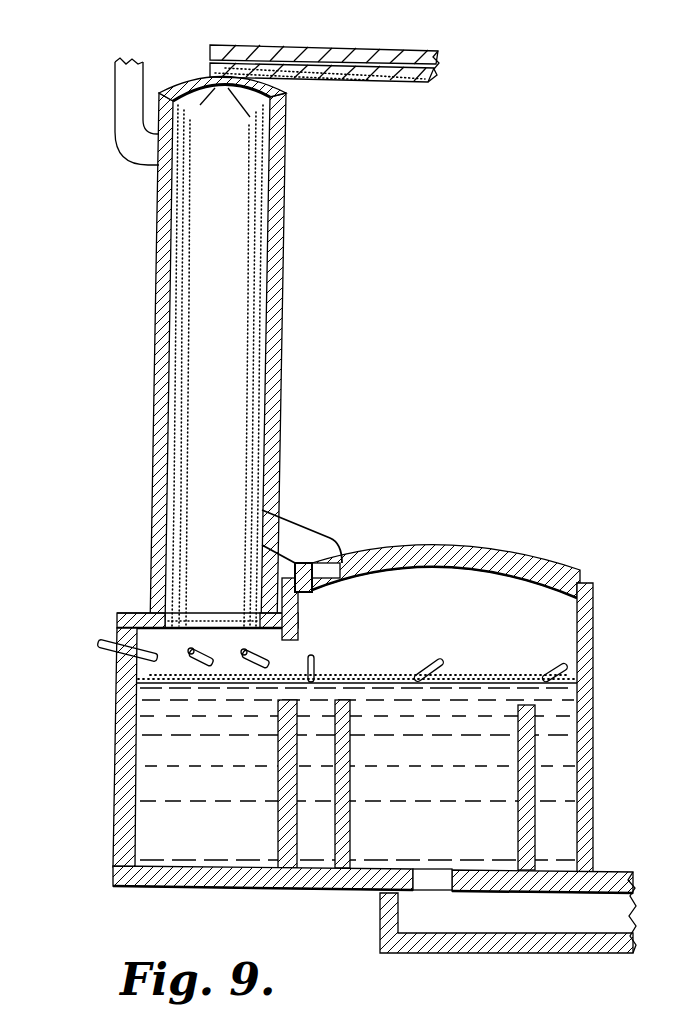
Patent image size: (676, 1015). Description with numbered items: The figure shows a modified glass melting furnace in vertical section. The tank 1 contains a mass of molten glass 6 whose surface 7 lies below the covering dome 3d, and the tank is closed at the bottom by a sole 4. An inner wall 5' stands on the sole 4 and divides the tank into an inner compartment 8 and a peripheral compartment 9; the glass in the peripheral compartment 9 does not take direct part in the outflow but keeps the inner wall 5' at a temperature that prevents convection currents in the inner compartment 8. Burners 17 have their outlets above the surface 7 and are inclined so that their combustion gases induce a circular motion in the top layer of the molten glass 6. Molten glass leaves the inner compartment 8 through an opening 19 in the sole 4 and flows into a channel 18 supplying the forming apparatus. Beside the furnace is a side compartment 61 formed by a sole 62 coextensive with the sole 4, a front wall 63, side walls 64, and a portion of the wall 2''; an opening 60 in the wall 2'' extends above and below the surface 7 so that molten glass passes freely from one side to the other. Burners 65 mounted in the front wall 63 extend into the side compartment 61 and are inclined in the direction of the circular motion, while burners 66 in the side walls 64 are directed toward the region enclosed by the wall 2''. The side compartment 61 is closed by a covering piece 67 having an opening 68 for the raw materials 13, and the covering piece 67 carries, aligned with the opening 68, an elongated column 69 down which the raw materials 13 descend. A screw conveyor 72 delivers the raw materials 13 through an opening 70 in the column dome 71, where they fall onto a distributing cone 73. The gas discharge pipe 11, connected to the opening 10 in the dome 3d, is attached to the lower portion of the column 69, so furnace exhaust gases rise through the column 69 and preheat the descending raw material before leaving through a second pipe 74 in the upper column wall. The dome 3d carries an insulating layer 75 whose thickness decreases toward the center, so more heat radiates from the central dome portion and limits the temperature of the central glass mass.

The tank 1 is at (595, 700).
The wall 2'' is at (458, 784).
The dome 3d is at (535, 578).
The sole 4 is at (370, 880).
The inner wall 5' is at (452, 785).
The mass of molten glass 6 is at (430, 700).
The surface 7 is at (485, 690).
The inner compartment 8 is at (448, 763).
The peripheral compartment 9 is at (320, 811).
The opening 10 is at (325, 577).
The pipe 11 is at (297, 538).
The raw materials 13 is at (256, 240).
The burners 17 is at (315, 666).
The channel 18 is at (580, 918).
The opening 19 is at (428, 882).
The opening 60 is at (292, 658).
The side compartment 61 is at (120, 795).
The sole 62 is at (232, 879).
The front wall 63 is at (128, 722).
The side walls 64 is at (123, 622).
The burners 65 is at (103, 645).
The burners 66 is at (254, 652).
The covering piece 67 is at (155, 644).
The opening 68 is at (195, 625).
The column 69 is at (153, 379).
The opening 70 is at (208, 82).
The dome 71 is at (189, 93).
The screw conveyor 72 is at (320, 55).
The distributing cone 73 is at (233, 98).
The second pipe 74 is at (128, 122).
The insulating layer 75 is at (545, 560).